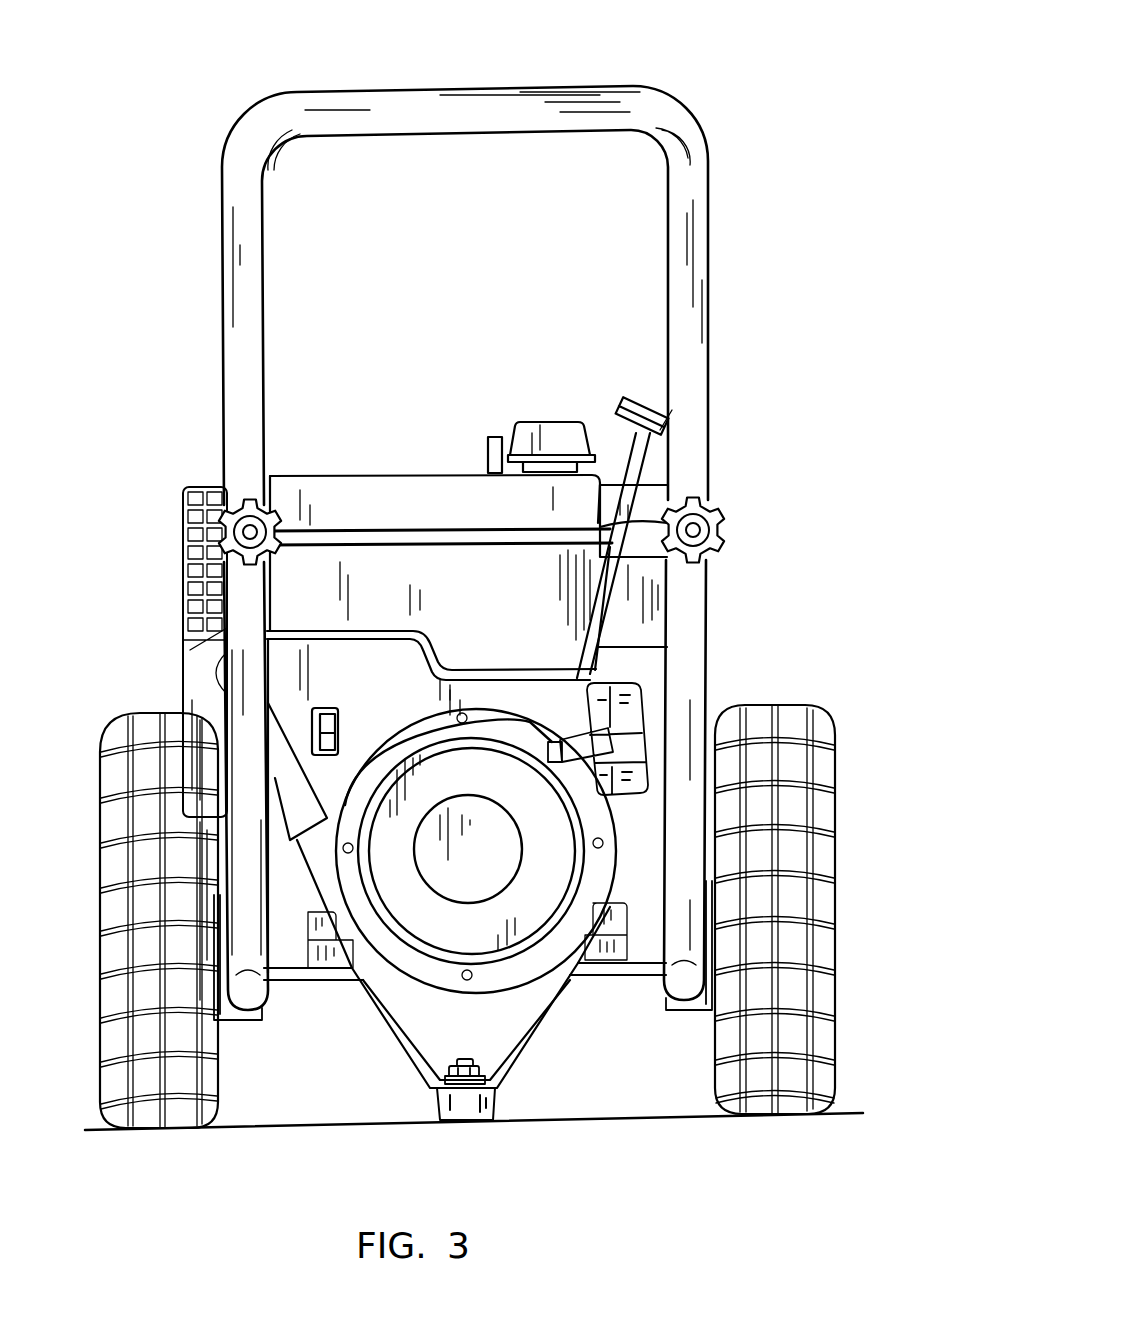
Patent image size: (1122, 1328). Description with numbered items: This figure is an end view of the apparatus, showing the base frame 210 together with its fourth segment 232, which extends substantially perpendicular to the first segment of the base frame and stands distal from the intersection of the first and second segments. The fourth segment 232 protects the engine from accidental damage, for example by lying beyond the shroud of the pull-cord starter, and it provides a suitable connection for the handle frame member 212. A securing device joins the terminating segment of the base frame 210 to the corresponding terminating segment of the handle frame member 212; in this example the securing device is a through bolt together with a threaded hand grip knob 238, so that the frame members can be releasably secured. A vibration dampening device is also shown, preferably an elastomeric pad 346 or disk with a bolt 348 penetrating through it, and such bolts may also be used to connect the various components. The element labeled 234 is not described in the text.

The handle frame member 212 is at (662, 105).
The threaded hand grip knob 238 is at (703, 507).
The fourth segment 232 is at (187, 657).
The base frame 210 is at (587, 678).
The pump 234 is at (553, 800).
The bolt 348 is at (470, 1062).
The elastomeric pad 346 is at (500, 1098).